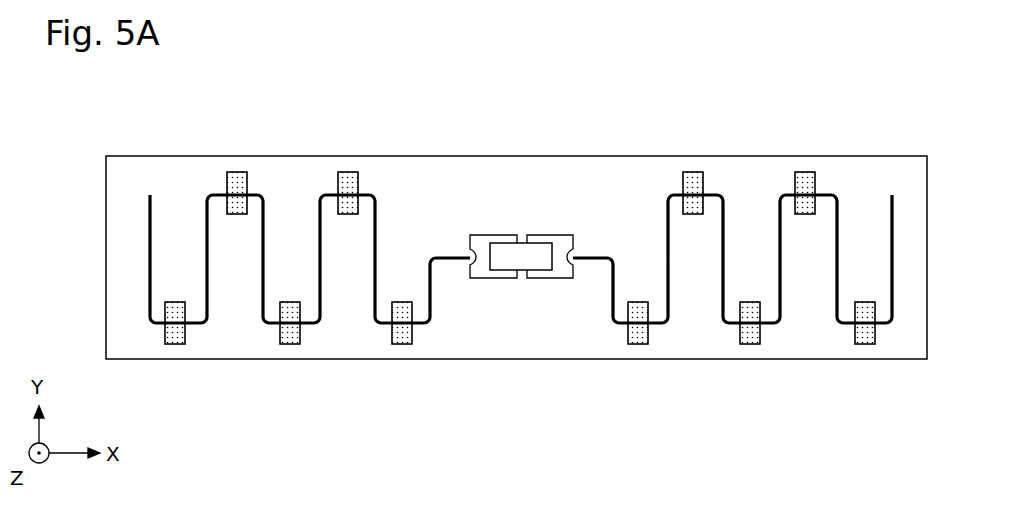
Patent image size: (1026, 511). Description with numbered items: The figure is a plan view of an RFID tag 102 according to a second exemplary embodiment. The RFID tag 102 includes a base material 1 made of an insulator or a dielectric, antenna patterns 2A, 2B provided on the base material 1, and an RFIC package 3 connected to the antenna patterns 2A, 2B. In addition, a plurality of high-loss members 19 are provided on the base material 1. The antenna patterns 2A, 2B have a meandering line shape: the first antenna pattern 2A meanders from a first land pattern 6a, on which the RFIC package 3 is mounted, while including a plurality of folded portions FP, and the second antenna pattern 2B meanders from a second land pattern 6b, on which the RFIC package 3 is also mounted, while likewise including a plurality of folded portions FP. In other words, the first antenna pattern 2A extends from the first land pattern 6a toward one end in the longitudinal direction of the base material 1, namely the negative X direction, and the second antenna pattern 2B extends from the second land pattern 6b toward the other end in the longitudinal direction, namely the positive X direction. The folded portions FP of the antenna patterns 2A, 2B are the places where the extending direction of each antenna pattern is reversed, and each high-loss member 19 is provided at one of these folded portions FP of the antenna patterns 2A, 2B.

The RFID tag 102 is at (741, 43).
The base material 1 is at (555, 181).
The first antenna pattern 2A is at (378, 192).
The second antenna pattern 2B is at (668, 192).
The RFIC package 3 is at (522, 250).
The first land pattern 6a is at (479, 272).
The second land pattern 6b is at (565, 272).
The high-loss member 19 is at (234, 173).
The folded portion FP is at (836, 192).